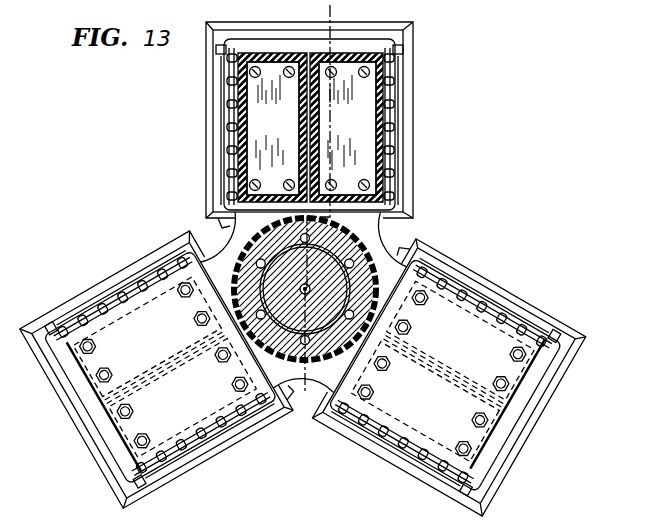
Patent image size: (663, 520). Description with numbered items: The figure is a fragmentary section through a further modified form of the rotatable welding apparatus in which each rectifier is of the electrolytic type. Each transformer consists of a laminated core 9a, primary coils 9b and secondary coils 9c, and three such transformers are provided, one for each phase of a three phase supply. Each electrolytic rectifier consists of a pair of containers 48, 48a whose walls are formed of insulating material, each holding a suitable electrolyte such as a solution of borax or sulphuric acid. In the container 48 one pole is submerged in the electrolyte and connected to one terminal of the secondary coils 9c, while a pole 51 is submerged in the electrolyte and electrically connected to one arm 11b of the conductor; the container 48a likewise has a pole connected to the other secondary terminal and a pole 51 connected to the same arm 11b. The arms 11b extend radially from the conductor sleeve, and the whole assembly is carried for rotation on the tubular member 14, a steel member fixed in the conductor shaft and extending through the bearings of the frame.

The laminated core 9a is at (204, 406).
The primary coils 9b is at (388, 77).
The secondary coils 9c is at (392, 110).
The arms 11b is at (478, 320).
The tubular member 14 is at (330, 5).
The container 48 is at (245, 142).
The container 48a is at (387, 172).
The pole 51 is at (365, 127).